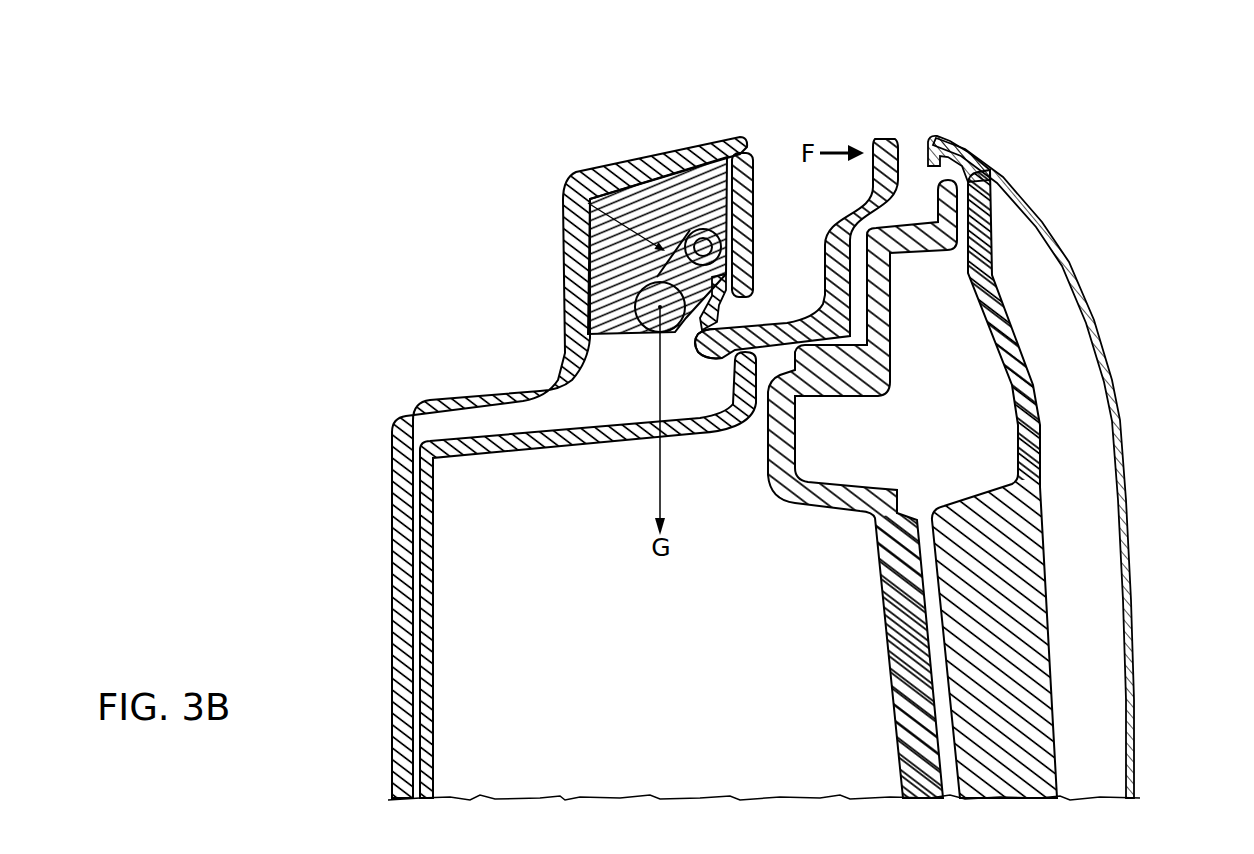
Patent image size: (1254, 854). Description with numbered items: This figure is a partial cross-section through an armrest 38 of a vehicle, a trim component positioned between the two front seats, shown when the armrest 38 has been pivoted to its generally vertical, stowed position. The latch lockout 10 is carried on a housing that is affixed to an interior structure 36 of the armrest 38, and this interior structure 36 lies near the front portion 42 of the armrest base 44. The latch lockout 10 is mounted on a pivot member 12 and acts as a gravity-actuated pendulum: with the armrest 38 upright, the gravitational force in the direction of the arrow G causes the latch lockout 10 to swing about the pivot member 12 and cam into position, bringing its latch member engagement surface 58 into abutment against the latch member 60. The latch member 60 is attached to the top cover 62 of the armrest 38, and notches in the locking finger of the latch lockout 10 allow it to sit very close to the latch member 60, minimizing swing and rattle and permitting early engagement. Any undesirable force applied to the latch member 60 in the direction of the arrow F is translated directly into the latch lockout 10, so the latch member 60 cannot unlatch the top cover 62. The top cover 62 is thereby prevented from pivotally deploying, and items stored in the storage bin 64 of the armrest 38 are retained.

The latch lockout 10 is at (569, 449).
The pivot member 12 is at (699, 228).
The interior structure 36 is at (752, 162).
The armrest 38 is at (1003, 467).
The front portion 42 is at (648, 165).
The armrest base 44 is at (575, 232).
The latch member engagement surface 58 is at (720, 360).
The latch member 60 is at (848, 187).
The top cover 62 is at (1057, 337).
The storage bin 64 is at (658, 666).